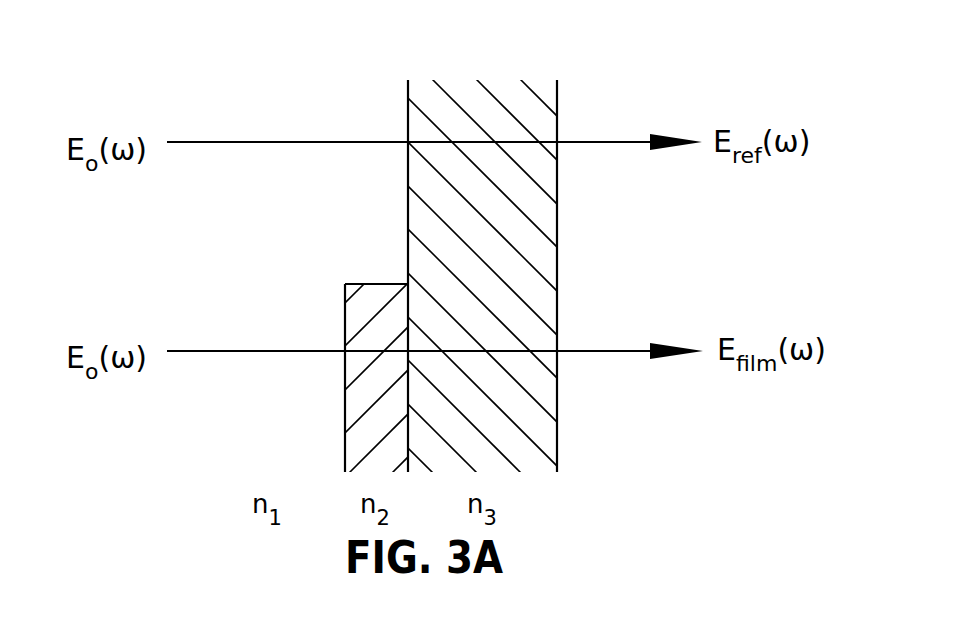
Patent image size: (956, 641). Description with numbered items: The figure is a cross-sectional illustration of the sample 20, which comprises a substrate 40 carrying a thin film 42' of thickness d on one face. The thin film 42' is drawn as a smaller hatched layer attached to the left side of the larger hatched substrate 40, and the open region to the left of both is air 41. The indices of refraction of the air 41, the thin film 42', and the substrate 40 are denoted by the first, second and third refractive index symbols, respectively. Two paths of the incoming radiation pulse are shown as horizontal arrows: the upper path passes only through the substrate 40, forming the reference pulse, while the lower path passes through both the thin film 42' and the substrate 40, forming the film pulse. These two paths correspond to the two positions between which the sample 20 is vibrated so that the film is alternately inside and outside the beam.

The substrate 40 is at (480, 103).
The thin film 42' is at (434, 311).
The air 41 is at (262, 265).
The sample 20 is at (620, 447).